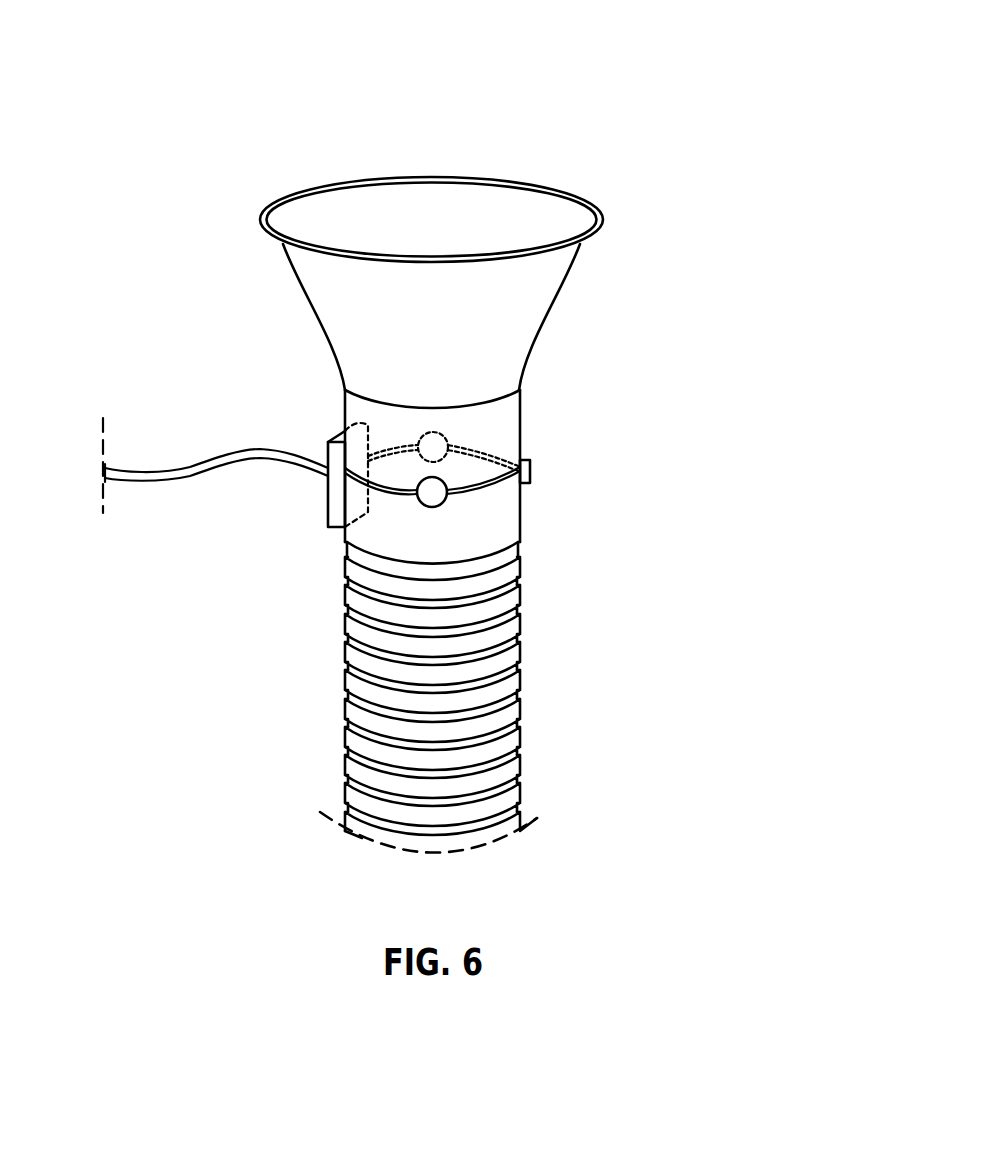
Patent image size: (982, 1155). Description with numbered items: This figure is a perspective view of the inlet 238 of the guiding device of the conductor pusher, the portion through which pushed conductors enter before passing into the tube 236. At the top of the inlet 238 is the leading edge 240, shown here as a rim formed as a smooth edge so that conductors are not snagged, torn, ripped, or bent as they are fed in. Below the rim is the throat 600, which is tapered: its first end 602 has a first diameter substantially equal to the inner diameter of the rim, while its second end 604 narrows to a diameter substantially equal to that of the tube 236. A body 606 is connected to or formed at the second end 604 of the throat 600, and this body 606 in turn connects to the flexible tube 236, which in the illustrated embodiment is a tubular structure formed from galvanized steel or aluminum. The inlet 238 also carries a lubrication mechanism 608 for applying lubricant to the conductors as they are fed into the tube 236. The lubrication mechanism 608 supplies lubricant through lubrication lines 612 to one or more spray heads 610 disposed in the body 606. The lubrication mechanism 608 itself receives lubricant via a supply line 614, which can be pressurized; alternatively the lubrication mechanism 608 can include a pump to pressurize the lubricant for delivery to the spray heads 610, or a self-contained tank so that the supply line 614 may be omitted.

The inlet 238 is at (494, 74).
The first end 602 is at (605, 257).
The leading edge 240 is at (560, 196).
The throat 600 is at (342, 303).
The second end 604 is at (330, 400).
The body 606 is at (506, 532).
The tube 236 is at (506, 683).
The lubrication mechanism 608 is at (333, 503).
The spray heads 610 is at (437, 484).
The lubrication lines 612 is at (478, 494).
The supply line 614 is at (140, 472).